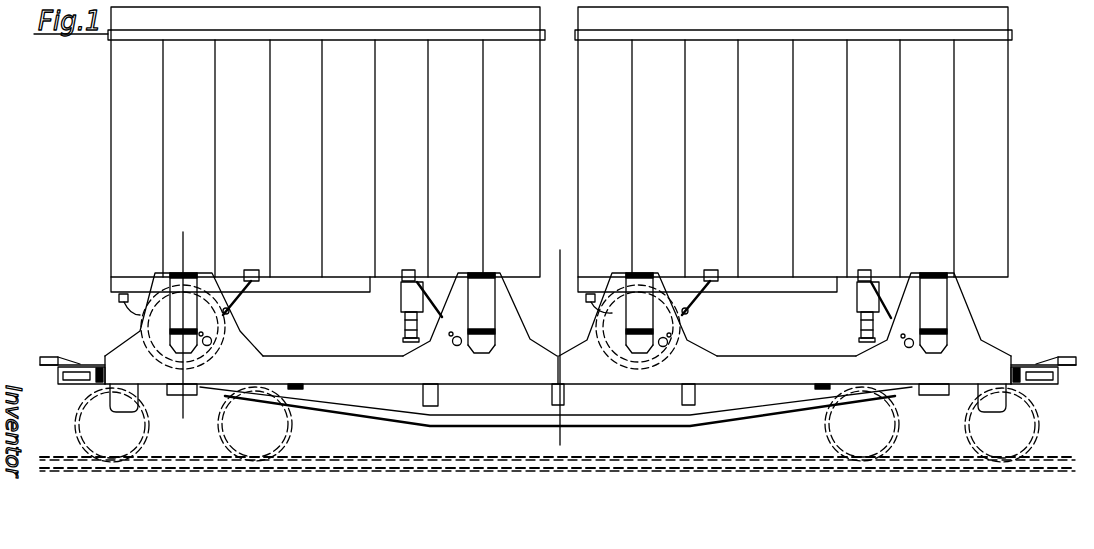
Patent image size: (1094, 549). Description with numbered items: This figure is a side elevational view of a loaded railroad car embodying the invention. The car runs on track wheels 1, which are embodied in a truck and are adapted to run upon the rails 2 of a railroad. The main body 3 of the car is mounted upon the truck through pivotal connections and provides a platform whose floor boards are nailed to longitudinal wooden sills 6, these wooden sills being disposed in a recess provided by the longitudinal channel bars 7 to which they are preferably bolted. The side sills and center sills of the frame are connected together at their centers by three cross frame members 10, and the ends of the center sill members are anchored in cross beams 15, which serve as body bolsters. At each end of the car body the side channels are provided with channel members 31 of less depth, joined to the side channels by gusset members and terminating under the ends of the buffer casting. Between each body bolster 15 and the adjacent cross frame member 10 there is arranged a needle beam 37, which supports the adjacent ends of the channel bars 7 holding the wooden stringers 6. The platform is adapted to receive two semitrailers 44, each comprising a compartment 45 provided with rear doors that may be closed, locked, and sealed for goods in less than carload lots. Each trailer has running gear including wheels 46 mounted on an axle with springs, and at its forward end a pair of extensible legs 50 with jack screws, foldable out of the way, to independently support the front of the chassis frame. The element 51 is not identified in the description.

The track wheels 1 is at (83, 408).
The rails 2 is at (405, 468).
The main body 3 is at (355, 350).
The longitudinal wooden sills 6 is at (198, 227).
The longitudinal channel bars 7 is at (570, 248).
The cross frame members 10 is at (433, 407).
The cross beams 15 is at (197, 395).
The channel members 31 is at (58, 372).
The needle beam 37 is at (318, 395).
The semitrailers 44 is at (108, 190).
The compartment 45 is at (125, 147).
The wheels 46 is at (145, 327).
The extensible legs 50 is at (405, 305).
The pedestal bracket with slot 51 is at (182, 300).